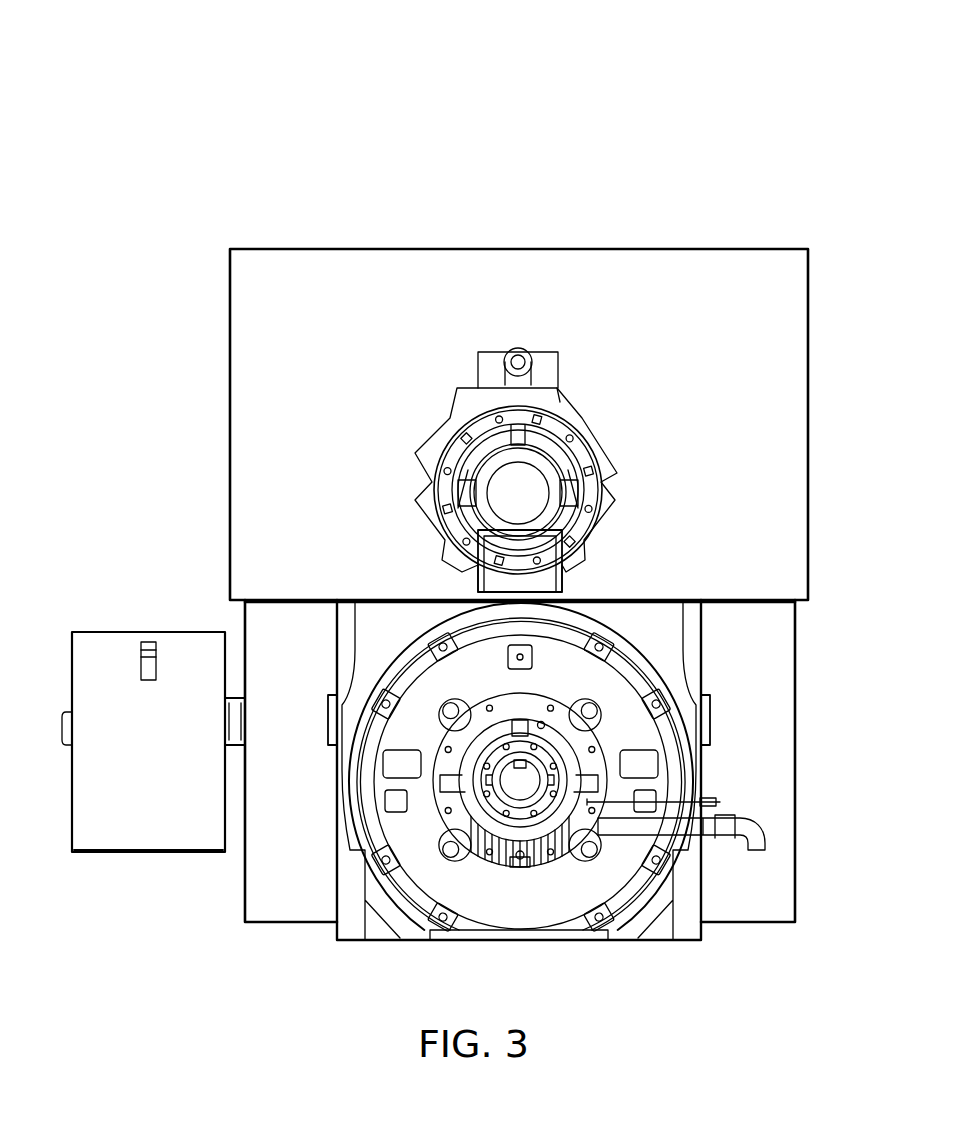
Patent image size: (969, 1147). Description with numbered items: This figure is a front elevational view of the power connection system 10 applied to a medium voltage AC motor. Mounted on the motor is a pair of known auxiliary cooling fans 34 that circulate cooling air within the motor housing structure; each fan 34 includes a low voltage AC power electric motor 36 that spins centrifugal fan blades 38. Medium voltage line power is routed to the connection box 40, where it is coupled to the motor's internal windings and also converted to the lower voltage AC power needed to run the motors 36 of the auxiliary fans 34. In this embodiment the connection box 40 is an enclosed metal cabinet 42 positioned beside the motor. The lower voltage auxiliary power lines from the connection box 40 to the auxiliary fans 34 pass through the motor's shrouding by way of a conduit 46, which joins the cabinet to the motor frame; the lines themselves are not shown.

The power connection system 10 is at (489, 128).
The auxiliary cooling fan 34 is at (447, 405).
The low voltage AC power electric motor 36 is at (530, 487).
The centrifugal fan blades 38 is at (562, 403).
The connection box 40 is at (112, 852).
The enclosed metal cabinet 42 is at (183, 853).
The conduit 46 is at (240, 698).